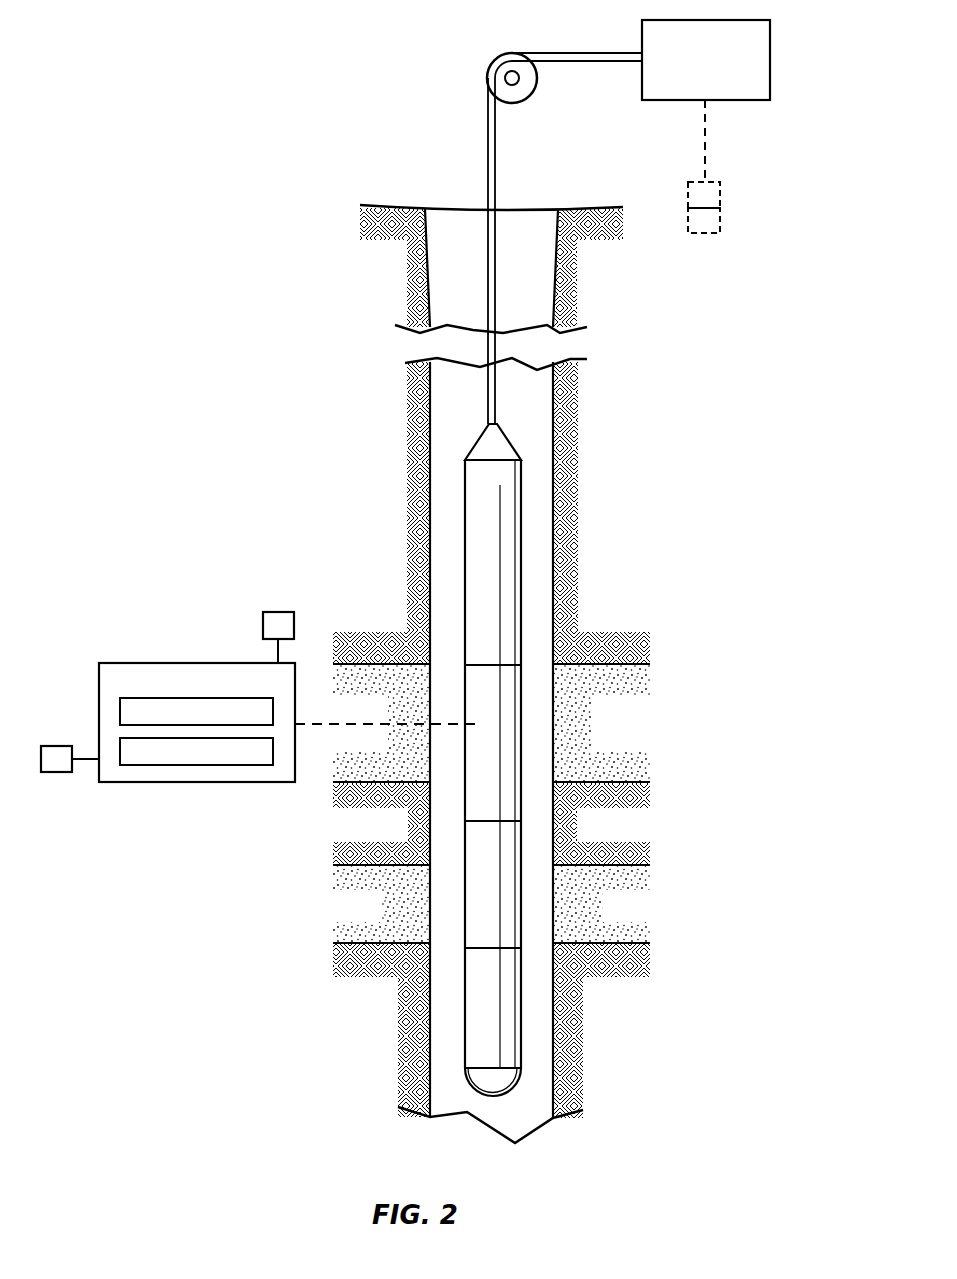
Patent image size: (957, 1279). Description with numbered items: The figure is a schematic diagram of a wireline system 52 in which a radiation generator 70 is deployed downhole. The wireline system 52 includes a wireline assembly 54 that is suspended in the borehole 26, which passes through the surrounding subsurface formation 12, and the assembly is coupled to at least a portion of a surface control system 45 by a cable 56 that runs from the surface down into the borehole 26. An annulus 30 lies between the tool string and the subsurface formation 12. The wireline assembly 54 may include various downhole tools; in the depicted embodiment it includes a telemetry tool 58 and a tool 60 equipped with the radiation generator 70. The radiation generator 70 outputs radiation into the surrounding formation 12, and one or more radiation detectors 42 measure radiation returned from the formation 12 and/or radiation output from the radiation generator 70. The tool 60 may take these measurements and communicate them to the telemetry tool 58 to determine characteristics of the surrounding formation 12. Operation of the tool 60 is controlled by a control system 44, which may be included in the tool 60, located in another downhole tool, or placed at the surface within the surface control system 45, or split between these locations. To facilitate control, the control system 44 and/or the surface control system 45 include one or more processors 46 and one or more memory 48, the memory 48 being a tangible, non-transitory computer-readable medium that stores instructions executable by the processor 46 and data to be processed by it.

The subsurface formation 12 is at (703, 673).
The borehole 26 is at (422, 408).
The annulus 30 is at (529, 230).
The radiation detector 42 is at (57, 772).
The control system 44 is at (195, 663).
The surface control system 45 is at (737, 20).
The processor 46 is at (720, 193).
The memory 48 is at (720, 223).
The wireline system 52 is at (411, 44).
The wireline assembly 54 is at (523, 509).
The cable 56 is at (487, 227).
The telemetry tool 58 is at (522, 594).
The tool 60 is at (521, 798).
The radiation generator 70 is at (263, 626).